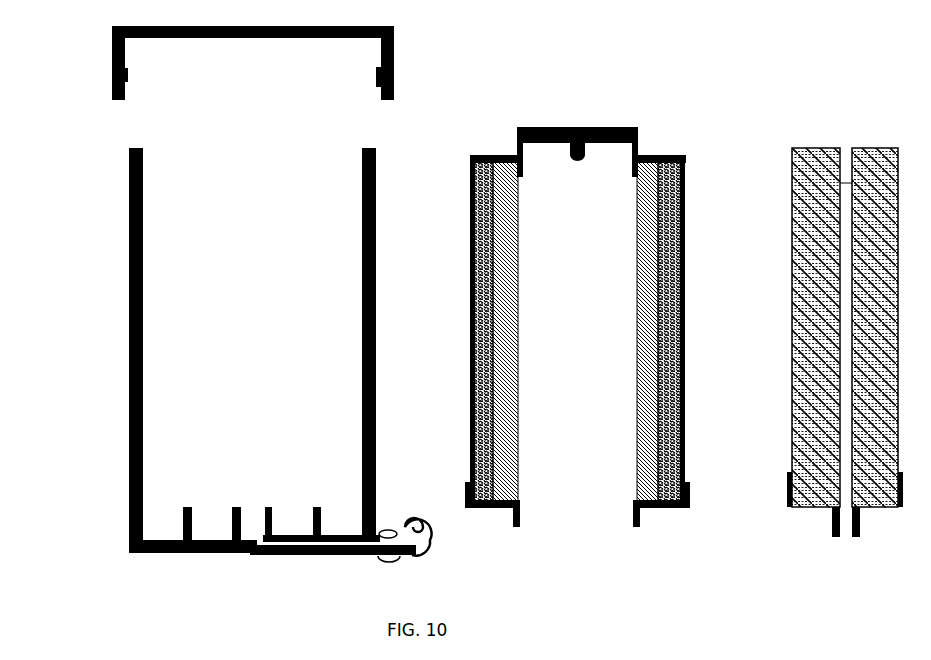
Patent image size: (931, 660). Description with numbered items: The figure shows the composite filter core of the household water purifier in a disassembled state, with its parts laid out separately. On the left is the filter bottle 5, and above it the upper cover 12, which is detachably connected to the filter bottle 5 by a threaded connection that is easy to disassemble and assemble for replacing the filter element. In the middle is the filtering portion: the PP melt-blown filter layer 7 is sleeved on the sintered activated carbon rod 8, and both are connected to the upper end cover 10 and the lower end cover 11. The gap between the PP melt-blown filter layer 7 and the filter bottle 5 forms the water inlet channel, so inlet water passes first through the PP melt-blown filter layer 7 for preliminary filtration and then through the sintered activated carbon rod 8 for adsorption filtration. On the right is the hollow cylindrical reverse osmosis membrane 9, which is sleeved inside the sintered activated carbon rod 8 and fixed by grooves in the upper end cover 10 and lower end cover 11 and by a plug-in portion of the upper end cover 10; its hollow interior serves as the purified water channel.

The filter bottle 5 is at (130, 320).
The PP melt-blown filter layer 7 is at (473, 313).
The sintered activated carbon rod 8 is at (518, 450).
The reverse osmosis membrane 9 is at (793, 507).
The upper end cover 10 is at (517, 127).
The lower end cover 11 is at (636, 512).
The upper cover 12 is at (142, 40).